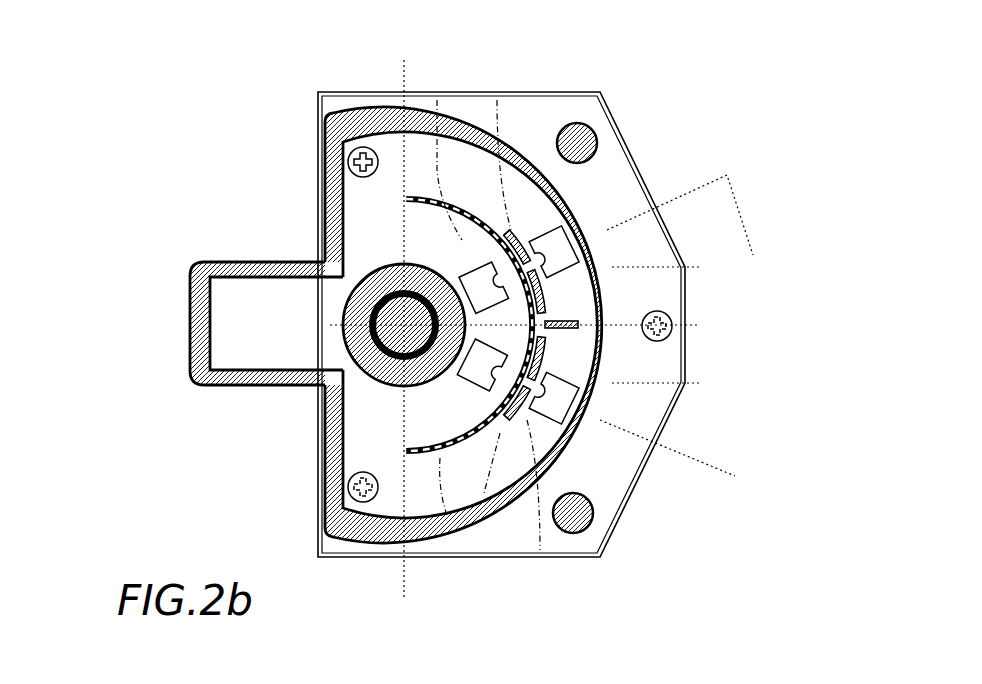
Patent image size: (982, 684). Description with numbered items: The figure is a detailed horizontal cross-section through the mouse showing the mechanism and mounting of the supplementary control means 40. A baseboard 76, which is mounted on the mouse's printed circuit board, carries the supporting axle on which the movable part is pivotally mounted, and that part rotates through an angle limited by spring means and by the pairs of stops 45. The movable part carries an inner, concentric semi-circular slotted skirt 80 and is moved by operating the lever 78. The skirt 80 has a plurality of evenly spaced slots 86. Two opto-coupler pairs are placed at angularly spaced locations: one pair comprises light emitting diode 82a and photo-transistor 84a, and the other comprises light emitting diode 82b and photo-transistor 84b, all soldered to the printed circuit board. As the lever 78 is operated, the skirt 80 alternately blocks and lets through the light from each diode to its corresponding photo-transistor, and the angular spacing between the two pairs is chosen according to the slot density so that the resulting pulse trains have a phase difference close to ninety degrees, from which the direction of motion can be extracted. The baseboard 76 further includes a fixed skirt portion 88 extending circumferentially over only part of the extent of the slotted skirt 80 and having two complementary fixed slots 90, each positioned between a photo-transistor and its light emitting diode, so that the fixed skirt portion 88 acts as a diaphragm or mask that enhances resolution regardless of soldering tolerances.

The supplementary control means 40 is at (170, 186).
The stops 45 is at (602, 140).
The baseboard 76 is at (667, 361).
The lever 78 is at (178, 345).
The slotted skirt 80 is at (424, 565).
The light emitting diode 82a is at (485, 565).
The light emitting diode 82b is at (500, 80).
The photo-transistor 84a is at (548, 428).
The photo-transistor 84b is at (573, 194).
The slots 86 is at (428, 78).
The fixed skirt portion 88 is at (531, 513).
The fixed slots 90 is at (575, 309).